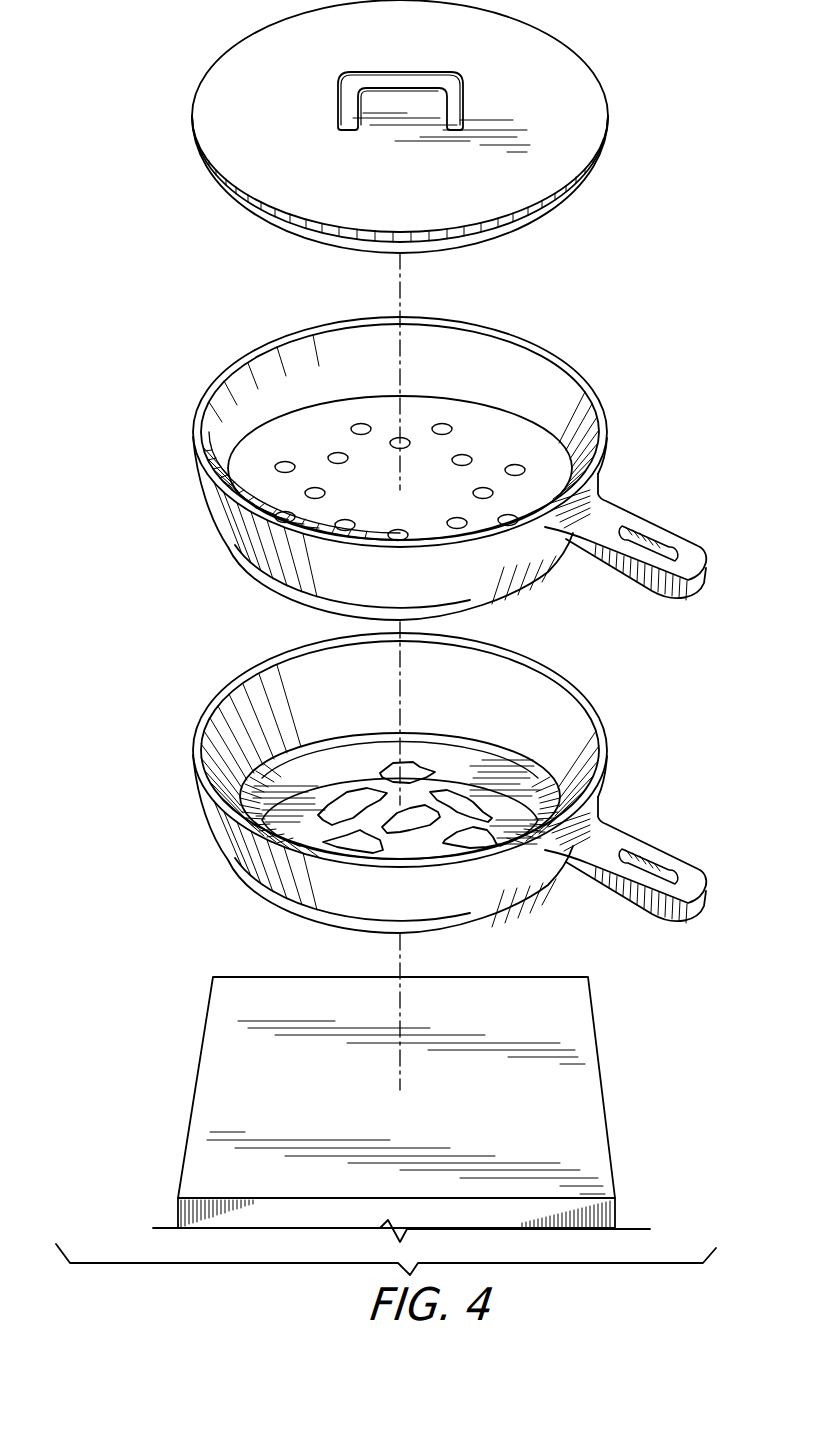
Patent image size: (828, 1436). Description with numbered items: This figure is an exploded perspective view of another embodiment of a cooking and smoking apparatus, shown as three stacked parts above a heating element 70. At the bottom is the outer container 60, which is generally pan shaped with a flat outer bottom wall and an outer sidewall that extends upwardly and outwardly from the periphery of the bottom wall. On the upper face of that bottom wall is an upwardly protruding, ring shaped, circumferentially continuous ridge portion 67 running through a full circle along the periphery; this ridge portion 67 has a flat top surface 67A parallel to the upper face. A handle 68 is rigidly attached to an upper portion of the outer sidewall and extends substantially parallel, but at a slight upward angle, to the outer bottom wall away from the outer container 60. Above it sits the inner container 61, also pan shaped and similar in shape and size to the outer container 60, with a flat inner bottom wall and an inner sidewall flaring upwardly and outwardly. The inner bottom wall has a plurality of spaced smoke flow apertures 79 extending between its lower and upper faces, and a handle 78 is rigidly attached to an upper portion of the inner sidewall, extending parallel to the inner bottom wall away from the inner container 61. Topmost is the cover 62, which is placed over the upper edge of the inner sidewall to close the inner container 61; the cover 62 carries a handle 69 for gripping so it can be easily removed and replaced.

The outer container 60 is at (584, 696).
The inner container 61 is at (603, 408).
The cover 62 is at (610, 115).
The ridge portion 67 is at (368, 752).
The flat top surface 67A is at (448, 748).
The handle 68 is at (622, 828).
The handle 69 is at (456, 94).
The heating element 70 is at (588, 1097).
The handle 78 is at (663, 523).
The smoke flow apertures 79 is at (473, 495).